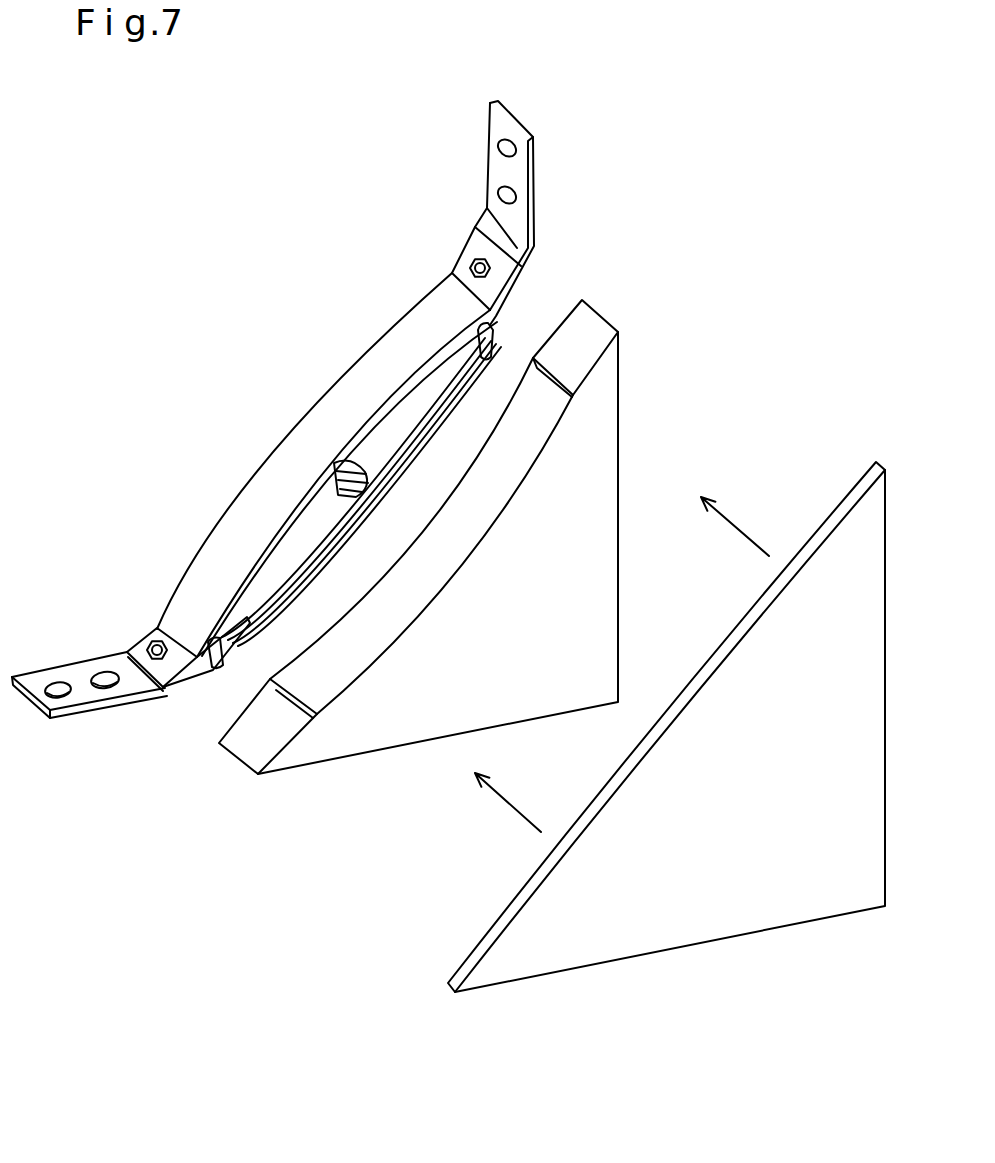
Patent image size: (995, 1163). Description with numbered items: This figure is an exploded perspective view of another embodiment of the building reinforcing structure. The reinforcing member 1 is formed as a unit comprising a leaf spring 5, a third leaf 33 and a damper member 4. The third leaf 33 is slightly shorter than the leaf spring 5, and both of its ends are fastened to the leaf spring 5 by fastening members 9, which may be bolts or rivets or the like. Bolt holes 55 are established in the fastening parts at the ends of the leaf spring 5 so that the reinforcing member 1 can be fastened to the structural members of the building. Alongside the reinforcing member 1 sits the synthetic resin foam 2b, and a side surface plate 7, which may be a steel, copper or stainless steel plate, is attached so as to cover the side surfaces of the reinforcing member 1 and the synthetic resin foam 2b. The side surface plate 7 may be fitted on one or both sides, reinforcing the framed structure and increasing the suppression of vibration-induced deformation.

The reinforcing member 1 is at (321, 427).
The third leaf 33 is at (392, 350).
The damper member 4 is at (340, 468).
The leaf spring 5 is at (530, 262).
The fastening member 9 is at (474, 261).
The bolt hole 55 is at (517, 157).
The synthetic resin foam 2b is at (606, 325).
The side surface plate 7 is at (841, 504).